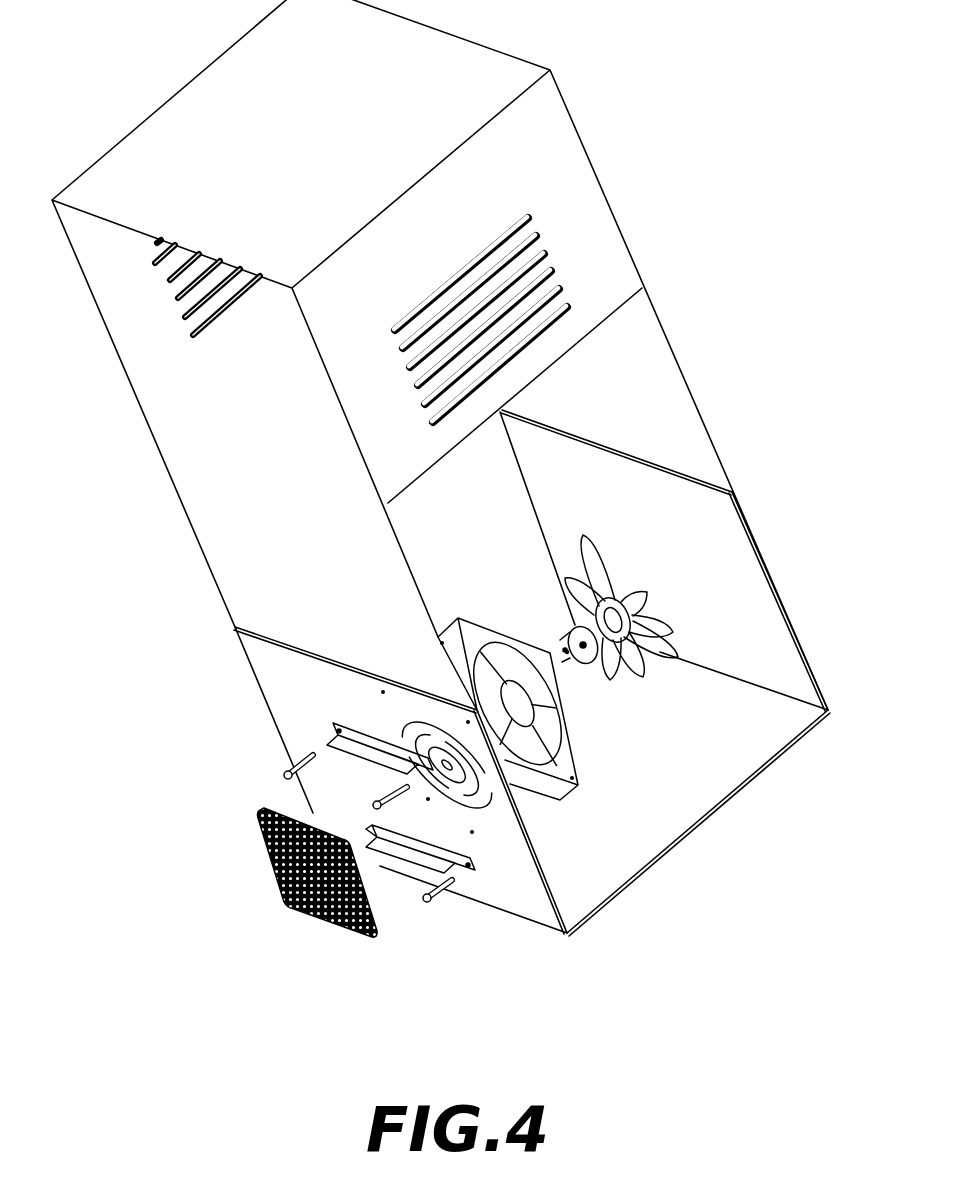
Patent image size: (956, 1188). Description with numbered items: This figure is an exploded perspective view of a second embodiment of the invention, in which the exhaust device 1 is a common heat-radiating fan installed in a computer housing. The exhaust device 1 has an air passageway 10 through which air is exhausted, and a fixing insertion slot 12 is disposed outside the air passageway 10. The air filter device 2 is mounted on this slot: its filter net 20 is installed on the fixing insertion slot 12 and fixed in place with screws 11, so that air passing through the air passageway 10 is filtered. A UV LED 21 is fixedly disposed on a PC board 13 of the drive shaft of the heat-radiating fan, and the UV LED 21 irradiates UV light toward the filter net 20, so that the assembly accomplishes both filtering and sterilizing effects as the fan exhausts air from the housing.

The exhaust device 1 is at (623, 653).
The air filter device 2 is at (166, 587).
The air passageway 10 is at (457, 793).
The screws 11 is at (430, 905).
The fixing insertion slot 12 is at (462, 866).
The PC board 13 is at (566, 652).
The filter net 20 is at (240, 830).
The UV LED 21 is at (558, 650).